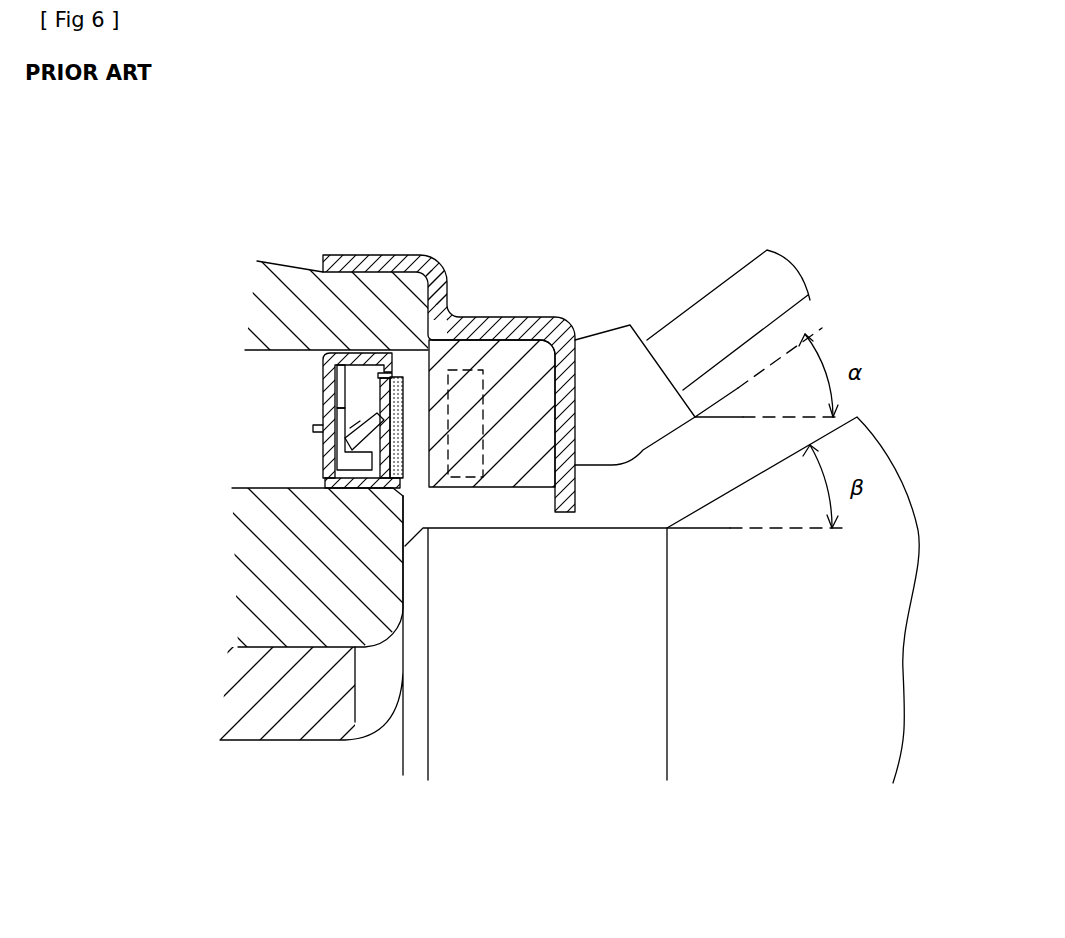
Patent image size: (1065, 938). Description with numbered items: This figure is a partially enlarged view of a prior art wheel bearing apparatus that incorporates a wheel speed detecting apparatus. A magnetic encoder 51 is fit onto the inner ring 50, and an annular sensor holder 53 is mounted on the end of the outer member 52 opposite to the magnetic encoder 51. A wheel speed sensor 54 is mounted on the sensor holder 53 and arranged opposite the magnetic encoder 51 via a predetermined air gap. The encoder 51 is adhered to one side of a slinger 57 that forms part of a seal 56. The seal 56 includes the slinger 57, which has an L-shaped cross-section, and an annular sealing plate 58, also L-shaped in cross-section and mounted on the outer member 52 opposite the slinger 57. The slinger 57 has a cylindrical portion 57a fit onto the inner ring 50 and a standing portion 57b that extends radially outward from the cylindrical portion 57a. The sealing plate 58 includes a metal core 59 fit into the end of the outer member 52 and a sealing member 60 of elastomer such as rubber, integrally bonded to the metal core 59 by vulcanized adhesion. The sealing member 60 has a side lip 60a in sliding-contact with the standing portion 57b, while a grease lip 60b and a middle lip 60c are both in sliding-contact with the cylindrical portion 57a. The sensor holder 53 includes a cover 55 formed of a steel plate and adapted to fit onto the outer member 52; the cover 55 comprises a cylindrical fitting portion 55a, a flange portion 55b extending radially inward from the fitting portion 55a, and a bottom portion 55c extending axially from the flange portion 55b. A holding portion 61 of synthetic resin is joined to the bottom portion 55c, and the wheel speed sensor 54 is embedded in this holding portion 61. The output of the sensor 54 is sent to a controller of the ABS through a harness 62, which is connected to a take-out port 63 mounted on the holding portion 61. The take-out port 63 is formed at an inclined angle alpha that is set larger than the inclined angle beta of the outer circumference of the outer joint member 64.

The inner ring 50 is at (278, 565).
The magnetic encoder 51 is at (430, 430).
The outer member 52 is at (302, 290).
The sensor holder 53 is at (662, 465).
The wheel speed sensor 54 is at (467, 428).
The cover 55 is at (450, 304).
The cylindrical fitting portion 55a is at (412, 254).
The flange portion 55b is at (443, 300).
The bottom portion 55c is at (534, 328).
The seal 56 is at (313, 480).
The slinger 57 is at (450, 498).
The cylindrical portion 57a is at (347, 488).
The standing portion 57b is at (402, 445).
The sealing plate 58 is at (221, 410).
The metal core 59 is at (317, 378).
The sealing member 60 is at (248, 421).
The side lip 60a is at (317, 420).
The grease lip 60b is at (330, 473).
The middle lip 60c is at (317, 440).
The holding portion 61 is at (503, 397).
The harness 62 is at (718, 290).
The take-out port 63 is at (605, 360).
The outer joint member 64 is at (727, 705).